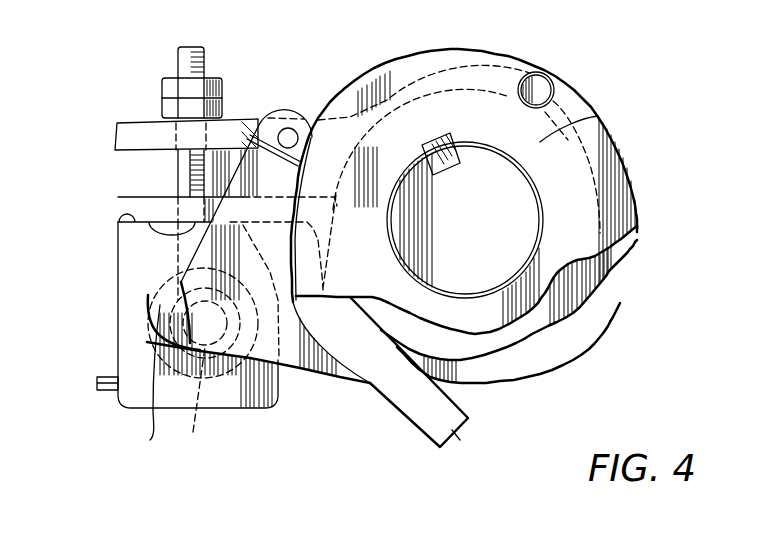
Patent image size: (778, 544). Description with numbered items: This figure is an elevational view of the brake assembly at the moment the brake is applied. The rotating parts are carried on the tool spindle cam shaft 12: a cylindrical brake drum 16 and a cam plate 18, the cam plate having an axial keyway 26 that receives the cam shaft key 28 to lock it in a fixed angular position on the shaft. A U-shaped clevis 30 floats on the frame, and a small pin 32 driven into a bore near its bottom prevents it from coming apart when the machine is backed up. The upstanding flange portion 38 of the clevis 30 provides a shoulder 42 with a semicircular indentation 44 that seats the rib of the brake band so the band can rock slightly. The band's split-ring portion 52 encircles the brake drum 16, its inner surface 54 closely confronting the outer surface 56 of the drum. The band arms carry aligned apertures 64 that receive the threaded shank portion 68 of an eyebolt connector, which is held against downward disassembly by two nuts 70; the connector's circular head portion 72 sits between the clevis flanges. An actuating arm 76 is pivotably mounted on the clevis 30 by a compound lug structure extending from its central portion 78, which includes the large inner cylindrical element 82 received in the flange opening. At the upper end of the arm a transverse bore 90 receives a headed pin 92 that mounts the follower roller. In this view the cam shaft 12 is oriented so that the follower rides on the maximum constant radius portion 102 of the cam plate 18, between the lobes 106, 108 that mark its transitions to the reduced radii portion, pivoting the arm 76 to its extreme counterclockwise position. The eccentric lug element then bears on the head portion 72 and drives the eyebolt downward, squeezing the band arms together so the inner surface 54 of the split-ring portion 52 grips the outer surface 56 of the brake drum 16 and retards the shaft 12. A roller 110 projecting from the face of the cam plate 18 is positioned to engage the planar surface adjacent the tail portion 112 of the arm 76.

The cam shaft 12 is at (522, 196).
The brake drum 16 is at (559, 326).
The cam plate 18 is at (414, 61).
The axial keyway 26 is at (446, 133).
The cam shaft key 28 is at (445, 165).
The clevis 30 is at (118, 344).
The pin 32 is at (103, 392).
The flange portion 38 is at (250, 394).
The shoulder 42 is at (118, 210).
The indentation 44 is at (168, 236).
The split-ring portion 52 is at (610, 303).
The inner surface 54 is at (520, 352).
The outer surface of the drum 56 is at (464, 366).
The aperture 64 is at (175, 186).
The threaded shank portion 68 is at (182, 57).
The nut 70 is at (222, 106).
The circular head portion 72 is at (191, 402).
The actuating arm 76 is at (416, 427).
The central portion 78 is at (180, 284).
The inner cylindrical element 82 is at (139, 381).
The transverse bore 90 is at (276, 166).
The headed pin 92 is at (298, 108).
The constant radius portion 102 is at (563, 200).
The lobe 106 is at (343, 288).
The lobe 108 is at (638, 228).
The roller 110 is at (549, 76).
The tail portion 112 is at (448, 430).